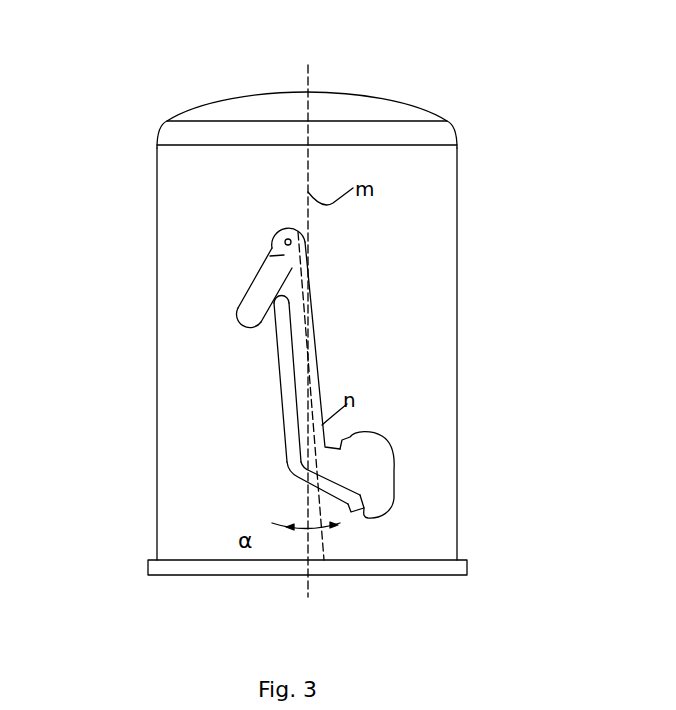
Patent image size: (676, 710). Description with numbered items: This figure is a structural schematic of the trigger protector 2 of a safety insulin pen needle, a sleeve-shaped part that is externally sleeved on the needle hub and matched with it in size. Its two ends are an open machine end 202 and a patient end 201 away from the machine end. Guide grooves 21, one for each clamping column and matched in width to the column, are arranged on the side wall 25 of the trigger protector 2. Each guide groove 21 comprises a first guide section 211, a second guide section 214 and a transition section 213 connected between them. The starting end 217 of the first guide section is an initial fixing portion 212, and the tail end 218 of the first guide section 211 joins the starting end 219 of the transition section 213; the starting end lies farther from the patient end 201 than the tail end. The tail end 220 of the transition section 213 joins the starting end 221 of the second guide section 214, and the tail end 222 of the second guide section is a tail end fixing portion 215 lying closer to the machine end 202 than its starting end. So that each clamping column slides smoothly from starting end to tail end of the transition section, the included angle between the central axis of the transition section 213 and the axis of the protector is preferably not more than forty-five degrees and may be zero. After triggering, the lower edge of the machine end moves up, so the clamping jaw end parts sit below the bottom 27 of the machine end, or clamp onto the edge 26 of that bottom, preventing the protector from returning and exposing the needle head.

The trigger protector 2 is at (316, 339).
The patient end 201 is at (346, 107).
The machine end 202 is at (210, 540).
The guide groove 21 is at (287, 405).
The first guide section 211 is at (165, 259).
The initial fixing portion 212 is at (255, 318).
The transition section 213 is at (303, 388).
The second guide section 214 is at (198, 474).
The tail end fixing portion 215 is at (378, 503).
The starting end of the first guide section 217 is at (243, 304).
The tail end of the first guide section 218 is at (282, 272).
The starting end of the transition section 219 is at (286, 239).
The tail end of the transition section 220 is at (317, 480).
The starting end of the second guide section 221 is at (300, 490).
The tail end of the second guide section 222 is at (444, 539).
The side wall 25 is at (420, 436).
The edge of the bottom of the machine end 26 is at (467, 566).
The bottom of the machine end 27 is at (160, 578).